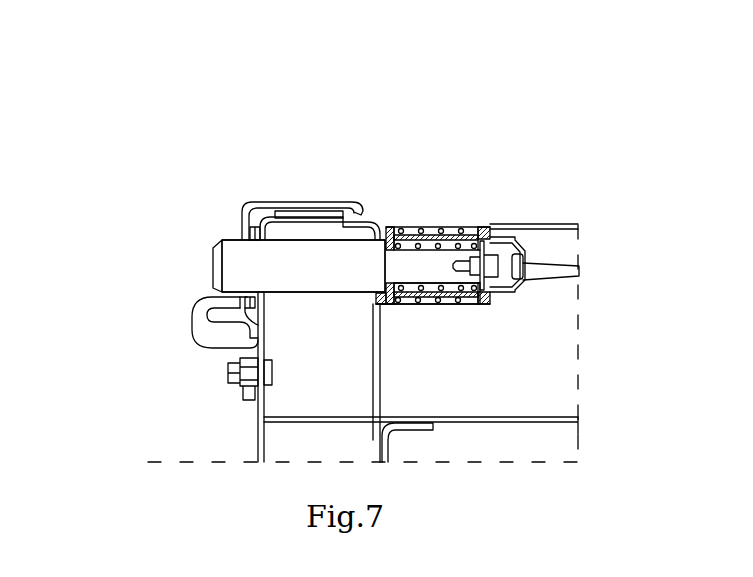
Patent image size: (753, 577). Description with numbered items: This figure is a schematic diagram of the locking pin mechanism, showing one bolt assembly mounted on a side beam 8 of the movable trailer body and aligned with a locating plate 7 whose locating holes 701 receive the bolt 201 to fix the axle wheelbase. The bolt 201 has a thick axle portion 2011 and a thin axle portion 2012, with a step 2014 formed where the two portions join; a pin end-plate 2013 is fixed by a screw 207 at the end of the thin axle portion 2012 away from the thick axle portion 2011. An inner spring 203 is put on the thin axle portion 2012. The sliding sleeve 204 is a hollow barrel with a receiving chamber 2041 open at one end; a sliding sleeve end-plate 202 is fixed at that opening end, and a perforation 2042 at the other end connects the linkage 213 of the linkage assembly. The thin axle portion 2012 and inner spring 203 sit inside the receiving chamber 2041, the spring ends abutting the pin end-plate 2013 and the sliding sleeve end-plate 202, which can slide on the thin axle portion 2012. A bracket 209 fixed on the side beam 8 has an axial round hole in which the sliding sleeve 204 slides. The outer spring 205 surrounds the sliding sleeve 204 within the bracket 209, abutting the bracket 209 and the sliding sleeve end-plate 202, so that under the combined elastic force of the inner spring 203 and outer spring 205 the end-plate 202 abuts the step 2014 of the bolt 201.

The bolt 201 is at (190, 272).
The thick axle portion 2011 is at (312, 268).
The thin axle portion 2012 is at (427, 276).
The pin end-plate 2013 is at (492, 238).
The step 2014 is at (384, 236).
The sliding sleeve end-plate 202 is at (388, 230).
The inner spring 203 is at (418, 240).
The sliding sleeve 204 is at (445, 238).
The receiving chamber 2041 is at (437, 244).
The perforation 2042 is at (530, 260).
The outer spring 205 is at (455, 236).
The screw 207 is at (528, 235).
The bracket 209 is at (492, 307).
The linkage 213 is at (553, 278).
The locating plate 7 is at (243, 230).
The side beam 8 is at (285, 211).
The locating hole 701 is at (240, 237).